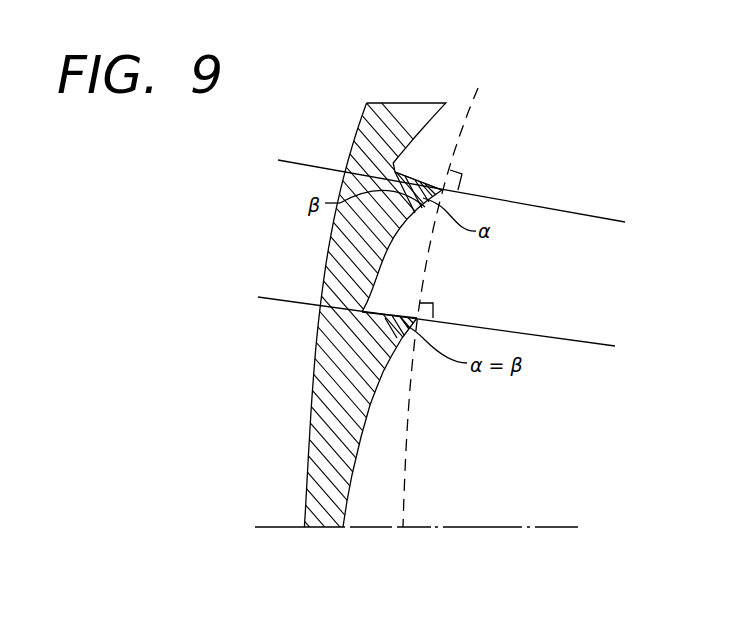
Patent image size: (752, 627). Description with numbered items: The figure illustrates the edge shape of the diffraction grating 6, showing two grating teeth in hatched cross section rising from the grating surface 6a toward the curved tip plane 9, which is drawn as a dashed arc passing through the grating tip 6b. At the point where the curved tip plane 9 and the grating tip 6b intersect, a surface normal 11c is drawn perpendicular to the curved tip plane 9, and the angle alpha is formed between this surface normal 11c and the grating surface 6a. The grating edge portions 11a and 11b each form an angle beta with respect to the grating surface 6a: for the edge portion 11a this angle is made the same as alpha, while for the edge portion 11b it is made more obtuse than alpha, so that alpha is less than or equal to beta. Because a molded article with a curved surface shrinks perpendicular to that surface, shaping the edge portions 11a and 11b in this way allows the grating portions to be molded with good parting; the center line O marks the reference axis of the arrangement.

The diffraction grating 6 is at (320, 455).
The grating surface 6a is at (352, 470).
The grating tip 6b is at (447, 191).
The curved tip plane 9 is at (475, 98).
The grating edge portion 11a is at (385, 312).
The grating edge portion 11b is at (422, 181).
The surface normal 11c is at (595, 218).
The rotation axis / center line O is at (493, 527).